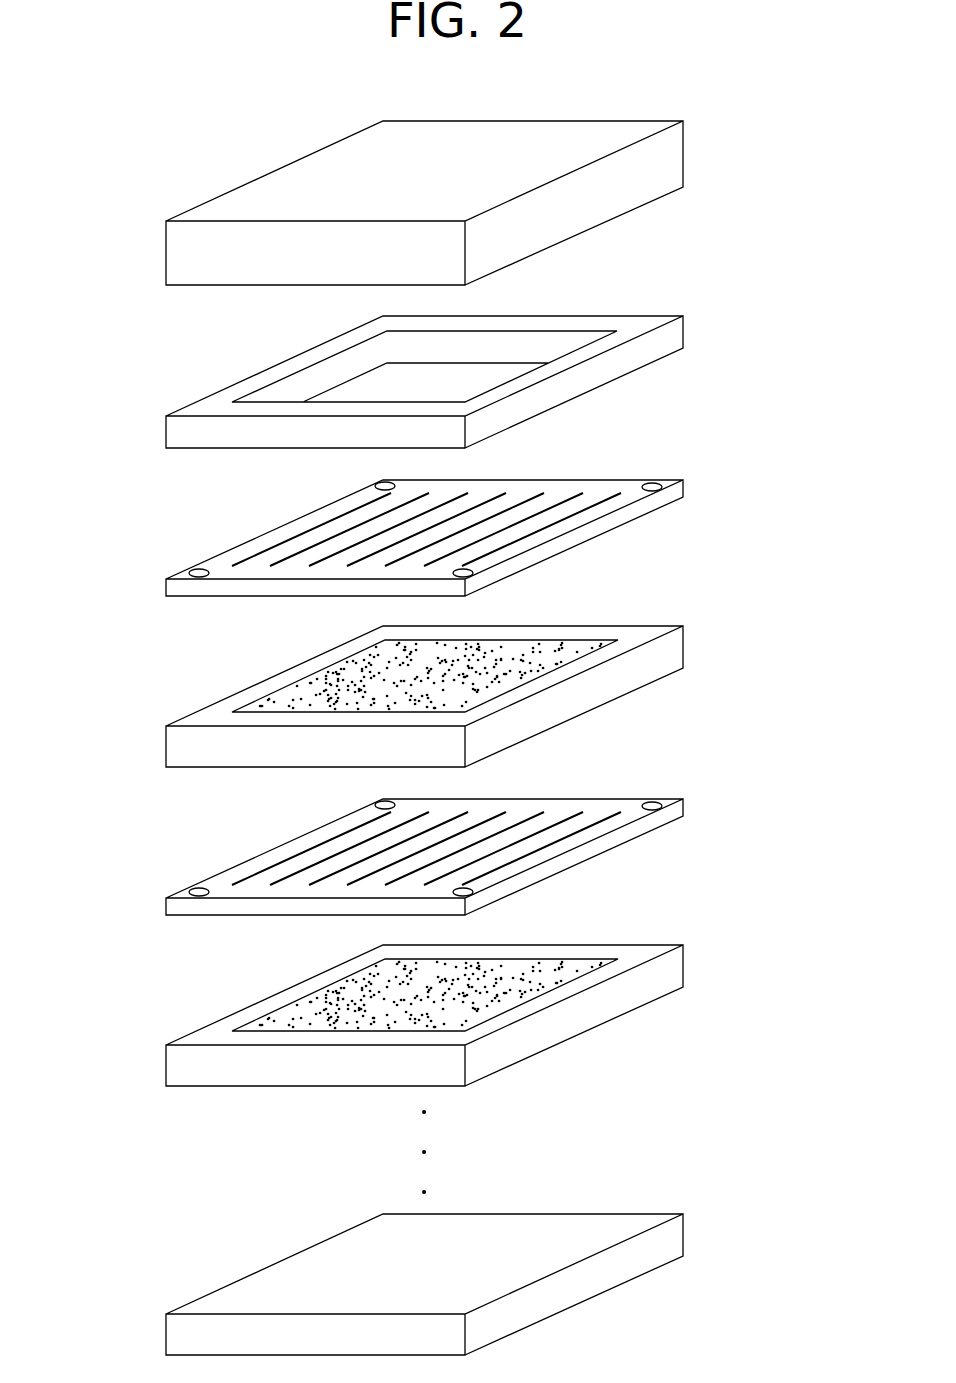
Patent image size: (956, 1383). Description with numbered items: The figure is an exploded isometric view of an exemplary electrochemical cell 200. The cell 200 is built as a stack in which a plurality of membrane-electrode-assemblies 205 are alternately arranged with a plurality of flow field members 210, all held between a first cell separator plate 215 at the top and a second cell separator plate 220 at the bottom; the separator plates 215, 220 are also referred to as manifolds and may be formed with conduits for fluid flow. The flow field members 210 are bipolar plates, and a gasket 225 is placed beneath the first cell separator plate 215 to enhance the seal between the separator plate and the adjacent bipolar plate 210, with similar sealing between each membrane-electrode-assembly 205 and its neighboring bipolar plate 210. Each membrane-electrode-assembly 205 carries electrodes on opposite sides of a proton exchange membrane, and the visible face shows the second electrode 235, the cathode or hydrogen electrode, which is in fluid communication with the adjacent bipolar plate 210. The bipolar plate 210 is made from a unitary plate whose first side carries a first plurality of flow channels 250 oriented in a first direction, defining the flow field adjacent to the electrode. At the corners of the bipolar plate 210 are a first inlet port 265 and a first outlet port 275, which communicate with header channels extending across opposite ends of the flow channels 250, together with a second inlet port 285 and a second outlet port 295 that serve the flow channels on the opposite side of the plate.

The cell 200 is at (131, 160).
The first cell separator plate 215 is at (683, 151).
The gasket 225 is at (683, 330).
The flow field member 210 is at (466, 669).
The first plurality of flow channels 250 is at (291, 539).
The first inlet port 265 is at (199, 570).
The first outlet port 275 is at (649, 482).
The second inlet port 285 is at (381, 484).
The second outlet port 295 is at (470, 571).
The membrane-electrode-assembly 205 is at (492, 854).
The second electrode 235 is at (346, 686).
The second cell separator plate 220 is at (683, 1238).